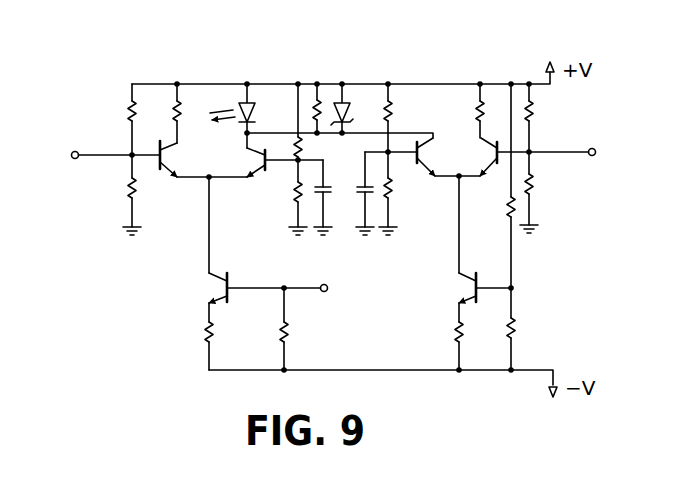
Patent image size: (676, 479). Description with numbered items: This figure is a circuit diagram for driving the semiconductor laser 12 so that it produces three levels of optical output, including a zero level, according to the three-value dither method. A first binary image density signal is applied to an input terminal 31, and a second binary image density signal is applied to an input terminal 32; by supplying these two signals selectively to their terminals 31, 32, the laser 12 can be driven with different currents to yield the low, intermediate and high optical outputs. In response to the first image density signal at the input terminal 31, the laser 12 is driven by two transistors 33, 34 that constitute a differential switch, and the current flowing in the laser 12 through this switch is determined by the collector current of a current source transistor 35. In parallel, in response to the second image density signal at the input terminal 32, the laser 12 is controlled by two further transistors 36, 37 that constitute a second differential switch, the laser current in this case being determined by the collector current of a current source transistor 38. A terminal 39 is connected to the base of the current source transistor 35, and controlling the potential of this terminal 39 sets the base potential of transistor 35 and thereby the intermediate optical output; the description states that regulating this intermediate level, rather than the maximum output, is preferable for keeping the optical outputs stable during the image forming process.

The semiconductor laser 12 is at (238, 125).
The input terminal 31 is at (73, 160).
The input terminal 32 is at (588, 160).
The transistor 33 is at (171, 166).
The transistor 34 is at (257, 169).
The current source transistor 35 is at (213, 280).
The transistor 36 is at (428, 168).
The transistor 37 is at (492, 168).
The current source transistor 38 is at (466, 290).
The terminal 39 is at (328, 285).